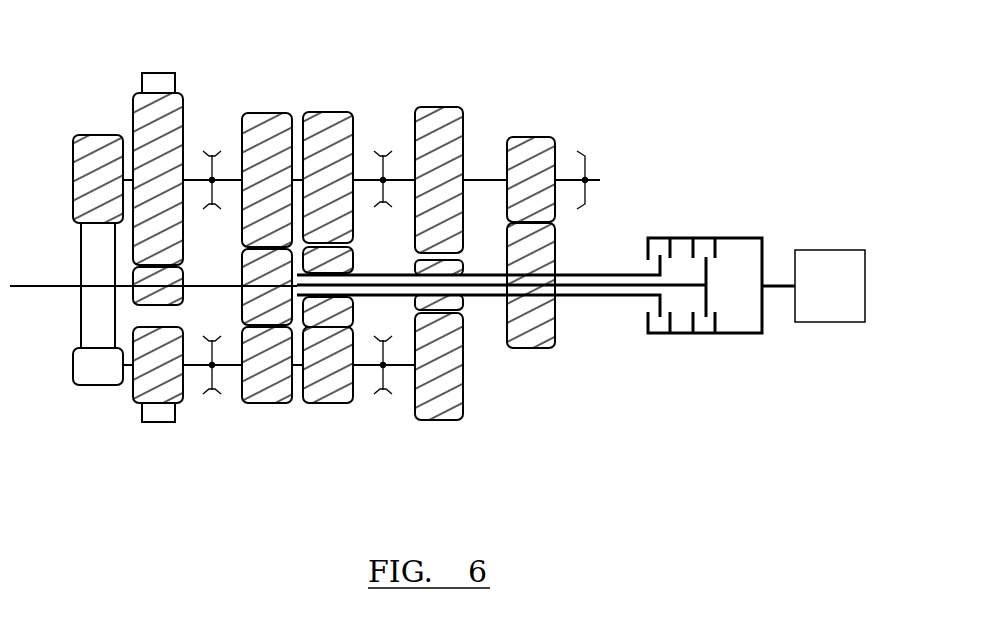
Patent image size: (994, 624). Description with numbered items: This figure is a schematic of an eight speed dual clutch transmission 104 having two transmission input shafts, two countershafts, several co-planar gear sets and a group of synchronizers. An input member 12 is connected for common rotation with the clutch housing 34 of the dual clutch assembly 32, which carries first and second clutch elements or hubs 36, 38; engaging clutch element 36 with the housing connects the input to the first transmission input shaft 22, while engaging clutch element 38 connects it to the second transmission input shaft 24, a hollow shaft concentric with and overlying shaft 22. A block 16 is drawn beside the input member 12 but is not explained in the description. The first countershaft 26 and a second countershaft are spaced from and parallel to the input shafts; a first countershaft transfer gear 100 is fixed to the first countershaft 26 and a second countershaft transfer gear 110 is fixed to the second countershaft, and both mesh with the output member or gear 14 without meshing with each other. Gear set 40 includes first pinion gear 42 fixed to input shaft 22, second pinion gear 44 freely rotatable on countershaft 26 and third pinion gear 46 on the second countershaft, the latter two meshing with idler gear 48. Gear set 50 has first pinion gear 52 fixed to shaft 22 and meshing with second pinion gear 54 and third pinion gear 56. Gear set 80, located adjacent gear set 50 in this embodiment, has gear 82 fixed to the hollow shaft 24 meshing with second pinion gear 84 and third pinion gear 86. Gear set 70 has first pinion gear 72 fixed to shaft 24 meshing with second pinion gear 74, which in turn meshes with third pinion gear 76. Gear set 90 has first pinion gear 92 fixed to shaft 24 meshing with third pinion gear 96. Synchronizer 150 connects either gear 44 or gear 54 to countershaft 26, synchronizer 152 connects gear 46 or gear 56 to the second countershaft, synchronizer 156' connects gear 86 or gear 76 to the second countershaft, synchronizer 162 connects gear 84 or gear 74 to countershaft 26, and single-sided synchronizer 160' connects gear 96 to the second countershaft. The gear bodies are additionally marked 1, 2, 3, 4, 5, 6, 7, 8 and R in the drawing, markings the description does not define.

The first gear 1 is at (150, 193).
The second gear 2 is at (430, 405).
The third gear 3 is at (150, 381).
The fourth gear 4 is at (320, 187).
The fifth gear 5 is at (259, 192).
The sixth gear 6 is at (320, 381).
The seventh gear 7 is at (259, 393).
The eighth gear 8 is at (523, 192).
The reverse gear R is at (429, 188).
The input member 12 is at (778, 292).
The output member 14 is at (86, 303).
The final drive 16 is at (818, 298).
The first transmission input shaft 22 is at (718, 284).
The second transmission input shaft 24 is at (592, 274).
The first countershaft 26 is at (128, 367).
The dual clutch assembly 32 is at (742, 214).
The clutch housing 34 is at (690, 237).
The first clutch element 36 is at (716, 321).
The second clutch element 38 is at (671, 319).
The co-planar gear set 40 is at (178, 438).
The first pinion gear 42 is at (184, 277).
The second pinion gear 44 is at (184, 397).
The third pinion gear 46 is at (146, 143).
The idler gear 48 is at (157, 72).
The co-planar gear set 50 is at (267, 424).
The first pinion gear 52 is at (255, 293).
The second pinion gear 54 is at (255, 358).
The third pinion gear 56 is at (255, 153).
The co-planar gear set 70 is at (426, 438).
The first pinion gear 72 is at (464, 306).
The second pinion gear 74 is at (426, 350).
The third pinion gear 76 is at (426, 147).
The gear set 80 is at (318, 428).
The first pinion gear 82 is at (354, 262).
The second pinion gear 84 is at (330, 404).
The third pinion gear 86 is at (326, 111).
The co-planar gear set 90 is at (514, 120).
The first pinion gear 92 is at (556, 317).
The third pinion gear 96 is at (537, 137).
The first countershaft transfer gear 100 is at (82, 381).
The eight speed dual clutch transmission 104 is at (750, 101).
The second countershaft transfer gear 110 is at (82, 193).
The synchronizer 150 is at (213, 338).
The synchronizer 152 is at (213, 154).
The synchronizer 156' is at (383, 147).
The synchronizer 160' is at (604, 152).
The synchronizer 162 is at (383, 393).